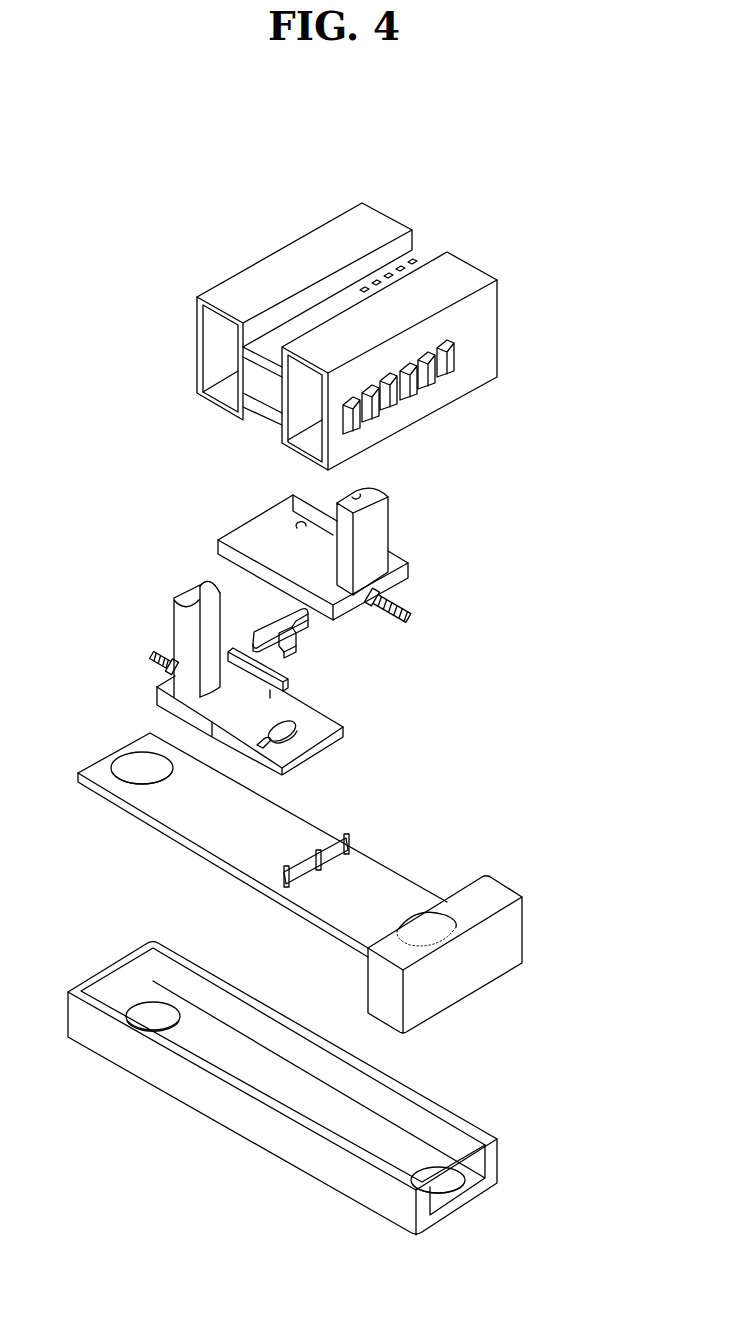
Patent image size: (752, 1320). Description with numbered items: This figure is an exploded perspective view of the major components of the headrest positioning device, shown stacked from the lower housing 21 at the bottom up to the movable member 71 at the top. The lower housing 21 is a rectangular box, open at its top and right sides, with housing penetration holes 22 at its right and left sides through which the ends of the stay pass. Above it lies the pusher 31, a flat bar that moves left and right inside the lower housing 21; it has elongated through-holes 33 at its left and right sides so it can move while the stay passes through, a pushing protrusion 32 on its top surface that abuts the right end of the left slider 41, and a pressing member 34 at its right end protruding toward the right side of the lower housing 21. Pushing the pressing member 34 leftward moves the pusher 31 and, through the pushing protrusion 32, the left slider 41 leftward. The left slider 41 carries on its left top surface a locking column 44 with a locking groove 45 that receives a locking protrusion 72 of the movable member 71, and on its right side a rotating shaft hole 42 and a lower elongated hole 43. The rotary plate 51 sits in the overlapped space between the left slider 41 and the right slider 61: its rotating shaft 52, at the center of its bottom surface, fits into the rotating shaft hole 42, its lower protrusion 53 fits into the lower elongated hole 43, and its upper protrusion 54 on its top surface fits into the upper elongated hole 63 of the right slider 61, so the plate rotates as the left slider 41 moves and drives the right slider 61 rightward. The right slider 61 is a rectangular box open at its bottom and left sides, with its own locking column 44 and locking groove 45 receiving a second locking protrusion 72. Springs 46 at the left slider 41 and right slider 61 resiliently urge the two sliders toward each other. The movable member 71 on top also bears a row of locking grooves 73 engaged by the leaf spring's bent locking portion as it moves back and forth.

The lower housing 21 is at (374, 1128).
The housing penetration holes 22 is at (146, 1004).
The pusher 31 is at (395, 878).
The pushing protrusion 32 is at (346, 843).
The elongated through-holes 33 is at (118, 752).
The pressing member 34 is at (523, 916).
The left slider 41 is at (318, 738).
The rotating shaft hole 42 is at (297, 728).
The lower elongated hole 43 is at (312, 742).
The locking column 44 is at (392, 505).
The locking groove 45 is at (352, 497).
The springs 46 is at (415, 604).
The rotary plate 51 is at (260, 636).
The rotating shaft 52 is at (292, 648).
The lower protrusion 53 is at (284, 666).
The upper protrusion 54 is at (310, 624).
The right slider 61 is at (243, 537).
The upper elongated hole 63 is at (278, 500).
The movable member 71 is at (480, 334).
The locking protrusion 72 is at (455, 372).
The locking grooves 73 is at (416, 246).